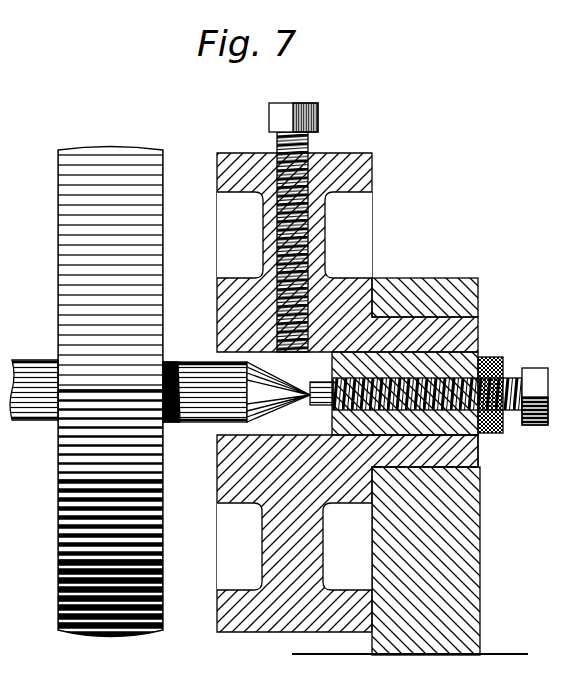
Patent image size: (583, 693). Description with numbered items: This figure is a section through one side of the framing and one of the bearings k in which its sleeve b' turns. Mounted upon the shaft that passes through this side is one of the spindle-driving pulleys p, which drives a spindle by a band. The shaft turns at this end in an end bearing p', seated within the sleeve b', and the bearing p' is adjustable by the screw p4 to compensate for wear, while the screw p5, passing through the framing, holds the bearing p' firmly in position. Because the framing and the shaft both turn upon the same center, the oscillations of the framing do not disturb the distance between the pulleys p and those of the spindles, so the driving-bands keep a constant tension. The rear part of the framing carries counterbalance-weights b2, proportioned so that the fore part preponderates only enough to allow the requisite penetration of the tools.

The pulley p is at (128, 395).
The end bearing p' is at (290, 388).
The screw p4 is at (440, 392).
The screw p5 is at (268, 103).
The sleeve b' is at (425, 451).
The counterbalance-weight b2 is at (425, 313).
The bearing k is at (425, 532).